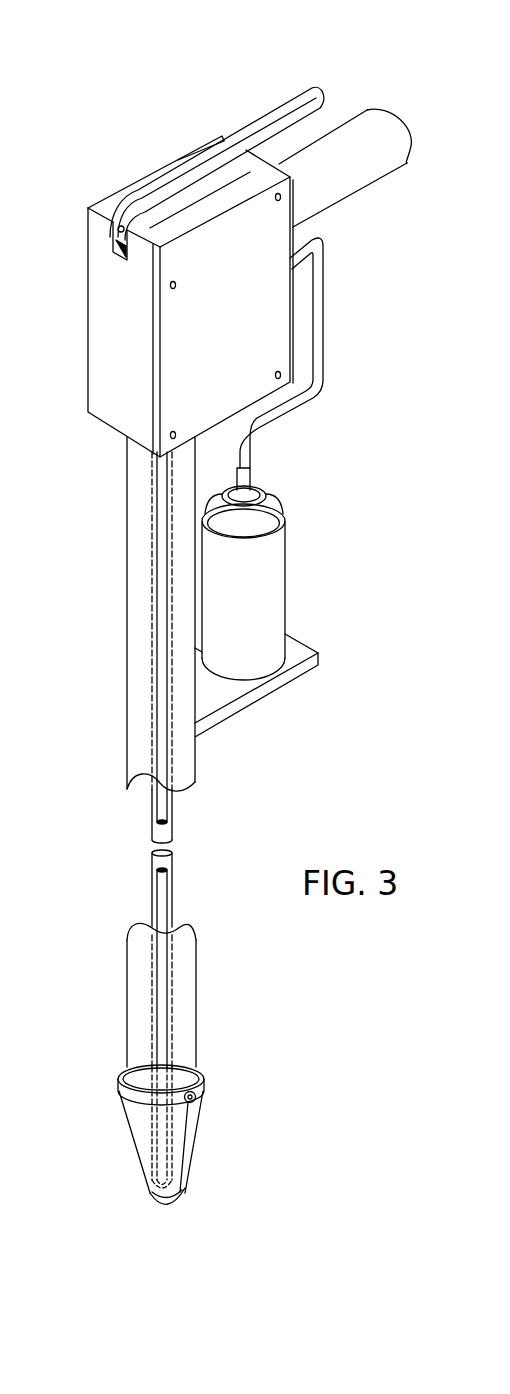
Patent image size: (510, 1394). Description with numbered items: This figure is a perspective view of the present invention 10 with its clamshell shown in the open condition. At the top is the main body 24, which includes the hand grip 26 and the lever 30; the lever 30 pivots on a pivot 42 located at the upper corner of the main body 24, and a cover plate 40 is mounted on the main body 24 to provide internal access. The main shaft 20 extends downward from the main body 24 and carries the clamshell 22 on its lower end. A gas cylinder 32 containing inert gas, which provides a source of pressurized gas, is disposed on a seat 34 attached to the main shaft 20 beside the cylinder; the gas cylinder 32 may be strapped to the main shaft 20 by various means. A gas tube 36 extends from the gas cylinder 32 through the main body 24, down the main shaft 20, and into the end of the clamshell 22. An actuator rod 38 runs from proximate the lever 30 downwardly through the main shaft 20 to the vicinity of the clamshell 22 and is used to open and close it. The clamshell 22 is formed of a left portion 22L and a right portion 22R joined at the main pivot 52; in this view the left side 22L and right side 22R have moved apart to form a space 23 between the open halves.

The present invention 10 is at (130, 88).
The main shaft 20 is at (135, 672).
The clamshell 22 is at (216, 1114).
The left portion 22L is at (138, 1138).
The right portion 22R is at (195, 1143).
The space 23 is at (179, 1195).
The main body 24 is at (72, 221).
The hand grip 26 is at (370, 122).
The lever 30 is at (293, 99).
The gas cylinder 32 is at (272, 575).
The seat 34 is at (298, 678).
The gas tube 36 is at (325, 318).
The actuator rod 38 is at (152, 833).
The cover plate 40 is at (241, 331).
The pivot 42 is at (137, 242).
The main pivot 52 is at (196, 1097).